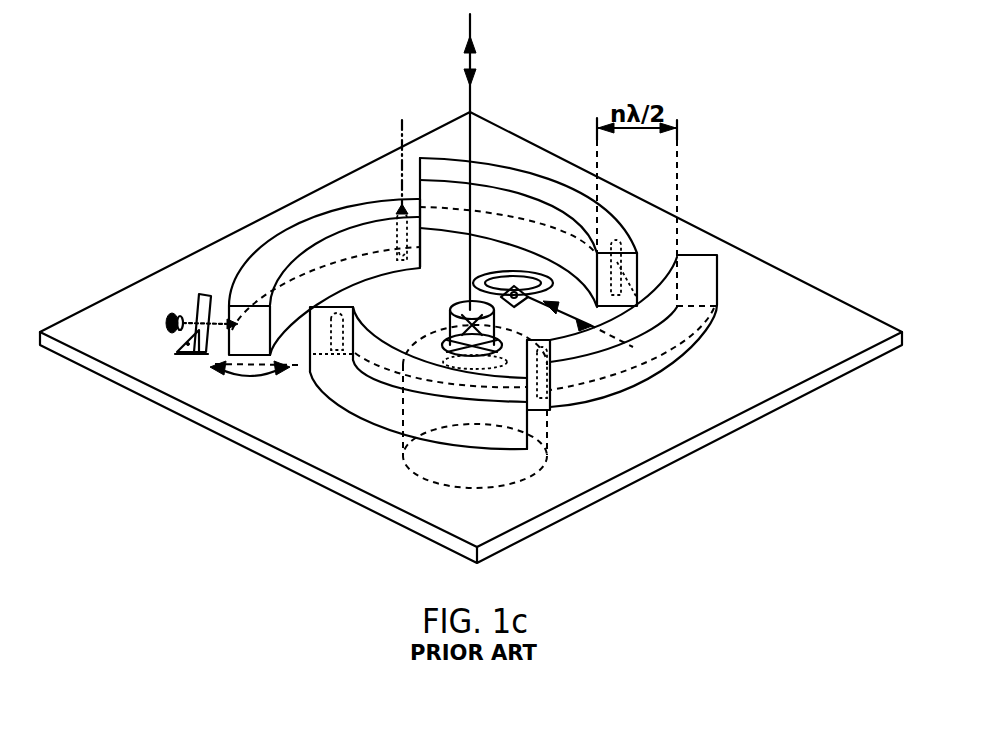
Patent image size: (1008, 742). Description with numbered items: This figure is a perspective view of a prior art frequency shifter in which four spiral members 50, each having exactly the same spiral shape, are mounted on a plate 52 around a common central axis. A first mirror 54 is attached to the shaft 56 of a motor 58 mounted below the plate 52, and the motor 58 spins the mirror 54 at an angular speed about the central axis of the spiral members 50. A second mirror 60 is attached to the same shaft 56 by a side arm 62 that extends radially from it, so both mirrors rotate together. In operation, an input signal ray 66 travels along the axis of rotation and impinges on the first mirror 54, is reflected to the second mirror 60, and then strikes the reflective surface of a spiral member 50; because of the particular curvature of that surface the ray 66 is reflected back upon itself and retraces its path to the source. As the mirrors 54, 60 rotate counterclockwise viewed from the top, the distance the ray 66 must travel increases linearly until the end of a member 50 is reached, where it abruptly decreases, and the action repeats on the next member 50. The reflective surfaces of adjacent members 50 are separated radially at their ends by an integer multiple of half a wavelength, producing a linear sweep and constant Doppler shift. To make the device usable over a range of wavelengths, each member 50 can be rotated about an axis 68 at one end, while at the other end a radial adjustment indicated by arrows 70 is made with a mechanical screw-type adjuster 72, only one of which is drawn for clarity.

The spiral member 50 is at (318, 227).
The plate 52 is at (292, 462).
The first mirror 54 is at (454, 310).
The shaft 56 is at (442, 330).
The motor 58 is at (545, 464).
The second mirror 60 is at (523, 276).
The side arm 62 is at (512, 312).
The input signal ray 66 is at (473, 60).
The axis 68 is at (398, 130).
The arrows 70 is at (250, 373).
The mechanical screw-type adjuster 72 is at (165, 320).